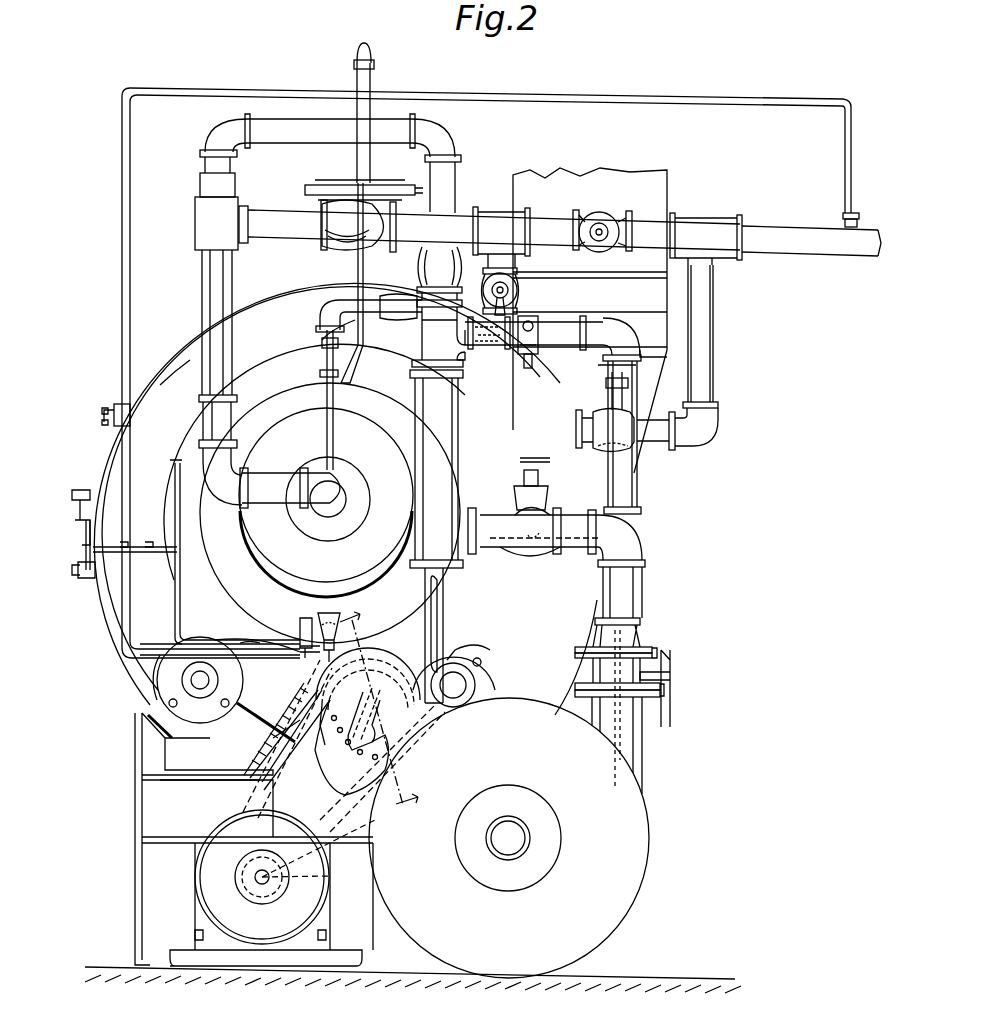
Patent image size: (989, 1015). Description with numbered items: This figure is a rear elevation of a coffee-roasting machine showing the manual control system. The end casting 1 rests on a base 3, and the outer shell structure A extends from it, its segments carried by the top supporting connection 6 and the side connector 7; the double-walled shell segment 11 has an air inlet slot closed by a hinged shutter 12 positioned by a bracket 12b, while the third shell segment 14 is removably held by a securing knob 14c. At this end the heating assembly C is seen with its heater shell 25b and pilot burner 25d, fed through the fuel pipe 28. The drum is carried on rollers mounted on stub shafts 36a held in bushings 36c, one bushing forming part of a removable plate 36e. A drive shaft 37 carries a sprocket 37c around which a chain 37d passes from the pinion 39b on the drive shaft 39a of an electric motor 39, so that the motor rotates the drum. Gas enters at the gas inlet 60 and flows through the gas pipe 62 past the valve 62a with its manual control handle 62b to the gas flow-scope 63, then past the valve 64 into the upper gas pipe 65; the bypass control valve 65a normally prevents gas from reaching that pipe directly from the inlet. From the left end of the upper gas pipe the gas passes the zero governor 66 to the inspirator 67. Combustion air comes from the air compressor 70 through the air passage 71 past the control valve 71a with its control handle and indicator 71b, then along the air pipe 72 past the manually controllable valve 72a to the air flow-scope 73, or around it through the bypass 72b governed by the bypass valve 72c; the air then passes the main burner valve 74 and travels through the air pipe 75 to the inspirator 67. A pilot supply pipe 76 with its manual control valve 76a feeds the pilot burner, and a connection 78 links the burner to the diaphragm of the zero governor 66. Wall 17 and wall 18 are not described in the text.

The end casting 1 is at (136, 805).
The base 3 is at (645, 978).
The top supporting connection 6 is at (322, 315).
The side connector 7 is at (377, 716).
The double-walled shell segment 11 is at (253, 342).
The shutter 12 is at (95, 525).
The bracket 12b is at (80, 490).
The third shell segment 14 is at (96, 645).
The securing knob 14c is at (86, 580).
The wall support 17 is at (642, 458).
The wall 18 is at (667, 190).
The heater shell 25b is at (250, 555).
The pilot burner 25d is at (330, 612).
The fuel pipe 28 is at (276, 484).
The stub shaft 36a is at (505, 660).
The bushing 36c is at (503, 646).
The removable plate 36e is at (503, 632).
The drive shaft 37 is at (390, 700).
The sprocket 37c is at (300, 735).
The chain 37d is at (278, 757).
The electric motor 39 is at (198, 858).
The motor drive shaft 39a is at (255, 877).
The pinion 39b is at (325, 878).
The gas inlet 60 is at (868, 258).
The gas pipe 62 is at (713, 364).
The valve 62a is at (596, 440).
The manual control handle 62b is at (582, 382).
The gas flow-scope 63 is at (520, 368).
The valve 64 is at (519, 292).
The upper gas pipe 65 is at (468, 216).
The bypass control valve 65a is at (618, 202).
The zero governor 66 is at (320, 185).
The inspirator 67 is at (205, 299).
The air compressor 70 is at (518, 714).
The air passage 71 is at (646, 755).
The control valve 71a is at (620, 668).
The control handle and indicator 71b is at (676, 712).
The air pipe 72 is at (582, 552).
The manually controllable valve 72a is at (538, 552).
The bypass 72b is at (642, 490).
The bypass valve 72c is at (550, 330).
The air flow-scope 73 is at (415, 416).
The main burner valve 74 is at (420, 273).
The air pipe 75 is at (287, 130).
The pilot supply pipe 76 is at (783, 106).
The manual control valve 76a is at (110, 416).
The connection 78 is at (355, 277).
The outer shell structure A is at (170, 369).
The heating assembly C is at (286, 409).